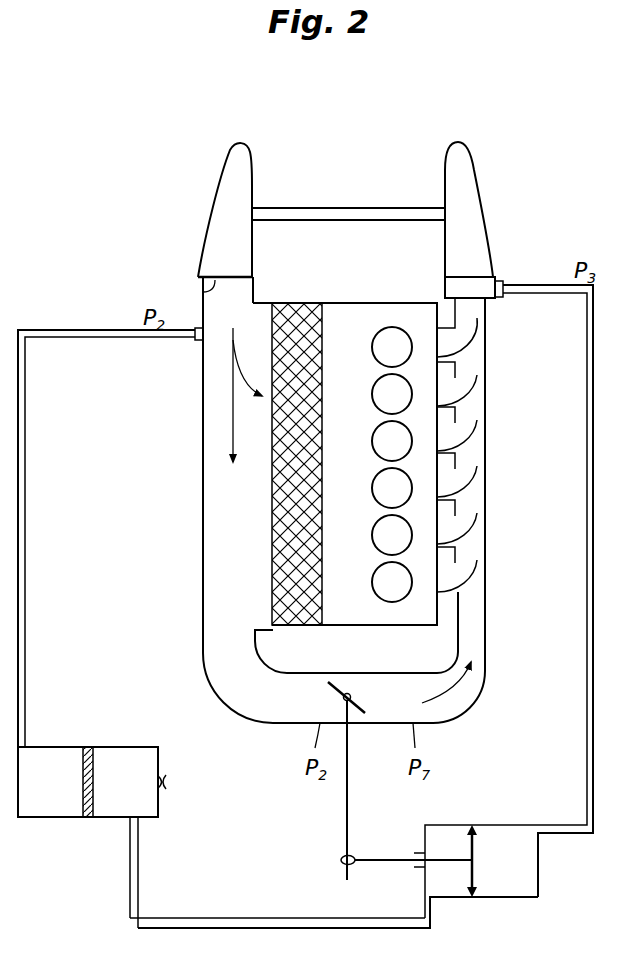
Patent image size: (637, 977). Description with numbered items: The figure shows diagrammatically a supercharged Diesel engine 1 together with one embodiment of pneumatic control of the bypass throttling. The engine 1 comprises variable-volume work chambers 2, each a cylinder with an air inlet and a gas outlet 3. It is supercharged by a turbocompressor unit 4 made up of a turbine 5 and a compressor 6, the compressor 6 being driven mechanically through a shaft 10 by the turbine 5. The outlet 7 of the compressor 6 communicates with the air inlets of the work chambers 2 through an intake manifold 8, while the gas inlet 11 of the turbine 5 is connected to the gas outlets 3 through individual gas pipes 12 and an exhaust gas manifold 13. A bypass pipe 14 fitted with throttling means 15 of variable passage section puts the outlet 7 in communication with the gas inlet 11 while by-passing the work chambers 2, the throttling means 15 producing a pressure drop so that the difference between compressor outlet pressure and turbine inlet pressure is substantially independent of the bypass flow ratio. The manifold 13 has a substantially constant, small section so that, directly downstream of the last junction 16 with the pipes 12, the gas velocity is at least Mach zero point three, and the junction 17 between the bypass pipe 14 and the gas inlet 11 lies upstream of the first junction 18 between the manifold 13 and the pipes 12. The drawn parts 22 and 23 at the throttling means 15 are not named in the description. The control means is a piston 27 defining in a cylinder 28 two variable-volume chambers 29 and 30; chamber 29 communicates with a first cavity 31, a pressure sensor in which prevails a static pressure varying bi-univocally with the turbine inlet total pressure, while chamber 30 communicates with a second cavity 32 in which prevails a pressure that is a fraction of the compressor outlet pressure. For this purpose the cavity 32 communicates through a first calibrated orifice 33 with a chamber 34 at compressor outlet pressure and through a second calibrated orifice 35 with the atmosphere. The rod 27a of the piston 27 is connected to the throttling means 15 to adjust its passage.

The supercharged Diesel engine 1 is at (196, 554).
The variable-volume work chambers 2 is at (375, 353).
The gas outlet 3 is at (437, 395).
The turbocompressor unit 4 is at (348, 201).
The turbine 5 is at (476, 195).
The compressor 6 is at (225, 184).
The outlet of the compressor 7 is at (203, 292).
The intake manifold 8 is at (203, 483).
The shaft 10 is at (375, 222).
The gas inlet of the turbine 11 is at (477, 313).
The individual gas pipes 12 is at (465, 427).
The exhaust gas manifold 13 is at (480, 490).
The bypass pipe 14 is at (293, 723).
The throttling means 15 is at (364, 728).
The last junction 16 is at (480, 320).
The junction 17 is at (485, 615).
The first junction 18 is at (483, 553).
The valve flap 22 is at (340, 686).
The valve pivot 23 is at (352, 694).
The piston 27 is at (478, 836).
The rod 27a is at (378, 856).
The cylinder 28 is at (503, 897).
The variable-volume chamber 29 is at (520, 834).
The variable-volume chamber 30 is at (438, 834).
The first cavity 31 is at (500, 283).
The second cavity 32 is at (115, 753).
The first calibrated orifice 33 is at (85, 782).
The chamber 34 is at (52, 753).
The second calibrated orifice 35 is at (168, 778).